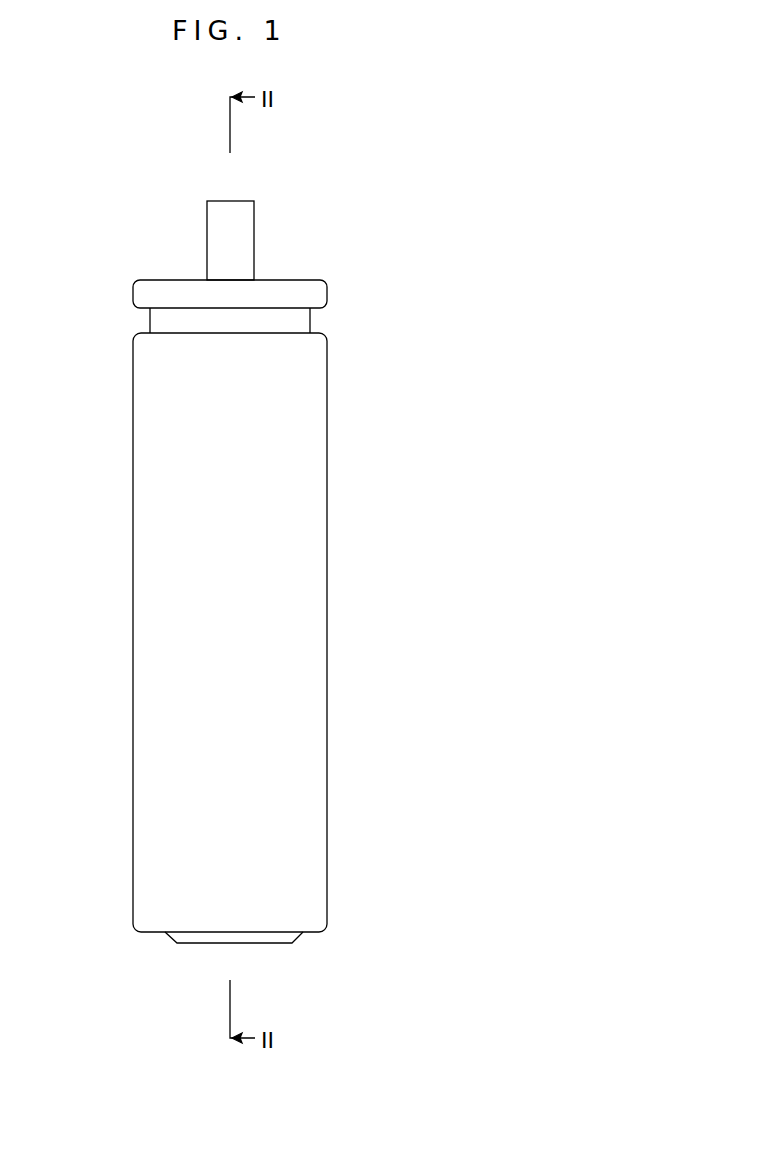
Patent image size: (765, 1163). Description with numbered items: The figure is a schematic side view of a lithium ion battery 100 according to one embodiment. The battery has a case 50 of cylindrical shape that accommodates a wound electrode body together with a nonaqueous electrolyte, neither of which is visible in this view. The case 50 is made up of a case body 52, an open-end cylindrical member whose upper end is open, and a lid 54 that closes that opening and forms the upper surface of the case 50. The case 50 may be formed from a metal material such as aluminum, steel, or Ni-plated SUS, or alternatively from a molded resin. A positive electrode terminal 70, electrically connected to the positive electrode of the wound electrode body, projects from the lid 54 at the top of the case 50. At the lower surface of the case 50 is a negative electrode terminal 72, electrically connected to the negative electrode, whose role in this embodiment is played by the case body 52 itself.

The lithium ion battery 100 is at (362, 253).
The case 50 is at (133, 740).
The case body 52 is at (313, 727).
The lid 54 is at (152, 292).
The positive electrode terminal 70 is at (245, 201).
The negative electrode terminal 72 is at (185, 942).